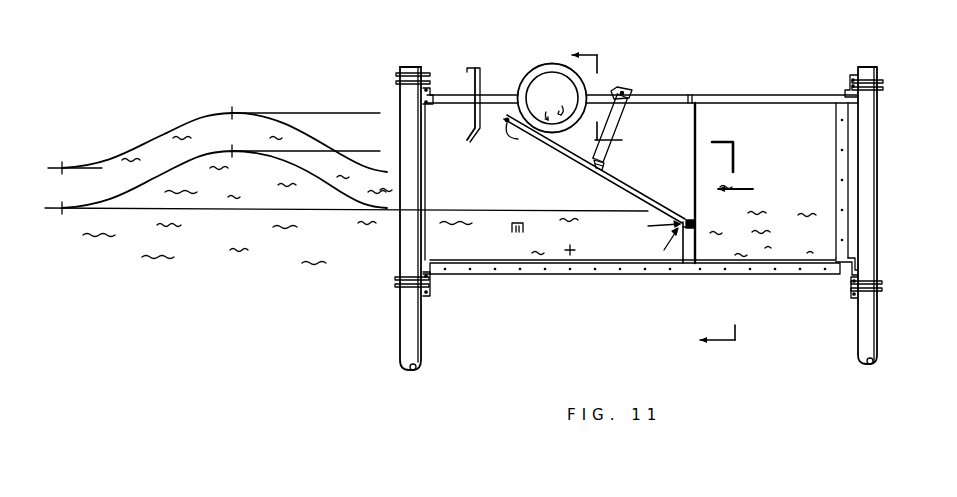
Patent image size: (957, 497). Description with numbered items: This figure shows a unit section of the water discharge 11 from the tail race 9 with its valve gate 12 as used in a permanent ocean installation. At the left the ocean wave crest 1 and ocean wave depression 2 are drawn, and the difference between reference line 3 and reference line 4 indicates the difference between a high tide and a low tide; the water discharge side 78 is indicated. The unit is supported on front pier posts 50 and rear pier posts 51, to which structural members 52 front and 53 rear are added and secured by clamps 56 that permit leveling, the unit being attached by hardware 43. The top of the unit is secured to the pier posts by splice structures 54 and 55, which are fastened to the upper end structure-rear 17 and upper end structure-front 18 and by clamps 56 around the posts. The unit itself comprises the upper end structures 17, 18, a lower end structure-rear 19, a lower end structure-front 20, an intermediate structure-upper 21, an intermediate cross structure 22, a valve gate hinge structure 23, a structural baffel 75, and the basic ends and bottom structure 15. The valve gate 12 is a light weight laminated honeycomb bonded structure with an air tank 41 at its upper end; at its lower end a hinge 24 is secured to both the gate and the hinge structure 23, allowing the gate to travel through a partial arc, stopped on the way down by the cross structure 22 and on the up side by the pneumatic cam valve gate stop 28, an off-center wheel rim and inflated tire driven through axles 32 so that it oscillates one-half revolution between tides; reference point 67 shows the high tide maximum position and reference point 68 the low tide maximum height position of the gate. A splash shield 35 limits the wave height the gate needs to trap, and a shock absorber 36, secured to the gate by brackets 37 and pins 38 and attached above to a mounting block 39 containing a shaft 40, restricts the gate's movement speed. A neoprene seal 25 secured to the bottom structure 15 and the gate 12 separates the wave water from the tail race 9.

The ocean wave crest 1 is at (234, 112).
The ocean wave depression 2 is at (63, 167).
The reference line 3 is at (338, 113).
The reference line 4 is at (376, 151).
The water discharge side 78 is at (350, 139).
The front pier posts 50 is at (399, 250).
The rear pier posts 51 is at (878, 188).
The splice structure 54 is at (423, 71).
The clamps 56 is at (396, 289).
The upper end structure-front 18 is at (432, 107).
The front structural member 52 is at (425, 296).
The rear structural member 53 is at (850, 298).
The splice structure 55 is at (846, 76).
The upper end structure-rear 17 is at (866, 100).
The lower end structure-rear 19 is at (862, 268).
The lower end structure-front 20 is at (430, 259).
The basic ends and bottom structure 15 is at (480, 261).
The intermediate structure-upper 21 is at (702, 96).
The unit section of water discharge from tail race and valve gate 11 is at (597, 275).
The splash shield 35 is at (481, 69).
The pneumatic cam valve gate stop 28 is at (521, 81).
The axles 32 is at (550, 109).
The valve gate 12 is at (648, 187).
The high tide maximum position 67 is at (508, 121).
The air tank 41 is at (519, 141).
The low tide maximum height position 68 is at (505, 153).
The shock absorbers 36 is at (627, 129).
The shaft 40 is at (626, 88).
The mounting block 39 is at (634, 93).
The brackets 37 is at (606, 165).
The pins 38 is at (631, 165).
The structural baffel 75 is at (697, 247).
The valve gate hinge structure 23 is at (698, 221).
The seal 25 is at (651, 224).
The hinge 24 is at (662, 245).
The intermediate cross structure 22 is at (523, 228).
The hardware 43 is at (576, 250).
The tail race 9 is at (764, 173).